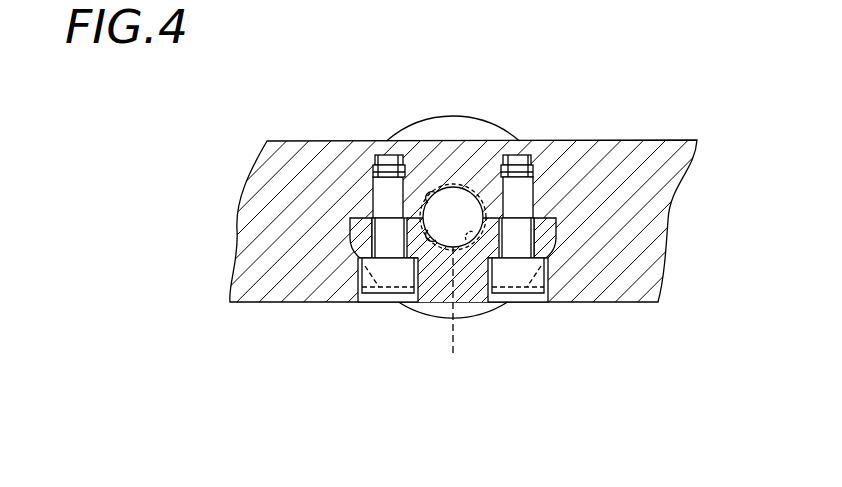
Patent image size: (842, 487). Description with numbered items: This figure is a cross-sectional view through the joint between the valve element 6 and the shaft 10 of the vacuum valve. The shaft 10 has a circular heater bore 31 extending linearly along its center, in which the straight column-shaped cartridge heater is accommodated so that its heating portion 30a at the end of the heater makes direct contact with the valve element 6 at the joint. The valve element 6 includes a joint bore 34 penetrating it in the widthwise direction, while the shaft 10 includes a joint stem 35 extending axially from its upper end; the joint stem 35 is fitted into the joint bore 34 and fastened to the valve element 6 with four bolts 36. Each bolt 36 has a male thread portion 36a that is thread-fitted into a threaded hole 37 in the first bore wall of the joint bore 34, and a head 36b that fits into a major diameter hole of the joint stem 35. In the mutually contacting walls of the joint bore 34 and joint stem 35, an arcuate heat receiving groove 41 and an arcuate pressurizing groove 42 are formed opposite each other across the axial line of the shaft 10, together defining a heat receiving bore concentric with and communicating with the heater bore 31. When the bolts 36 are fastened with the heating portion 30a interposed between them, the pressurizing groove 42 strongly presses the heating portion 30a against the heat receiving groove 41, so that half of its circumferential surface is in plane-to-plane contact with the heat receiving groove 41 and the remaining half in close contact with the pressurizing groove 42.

The valve element 6 is at (651, 165).
The shaft 10 is at (457, 115).
The heating portion 30a is at (463, 215).
The heater bore 31 is at (452, 321).
The joint bore 34 is at (543, 217).
The joint stem 35 is at (472, 267).
The bolt 36 is at (387, 300).
The male thread portion 36a is at (376, 186).
The head 36b is at (370, 295).
The threaded hole 37 is at (393, 183).
The heat receiving groove 41 is at (428, 198).
The pressurizing groove 42 is at (445, 248).